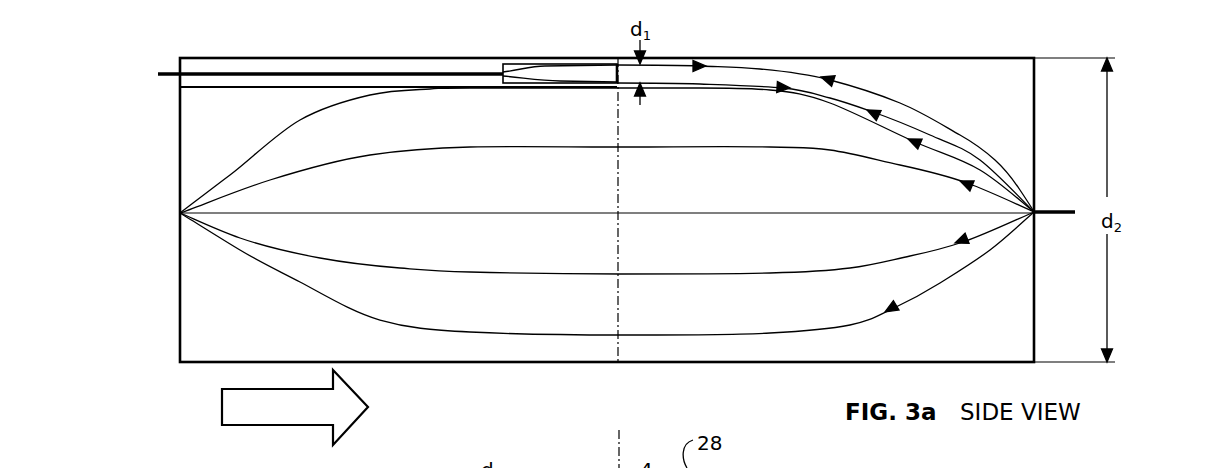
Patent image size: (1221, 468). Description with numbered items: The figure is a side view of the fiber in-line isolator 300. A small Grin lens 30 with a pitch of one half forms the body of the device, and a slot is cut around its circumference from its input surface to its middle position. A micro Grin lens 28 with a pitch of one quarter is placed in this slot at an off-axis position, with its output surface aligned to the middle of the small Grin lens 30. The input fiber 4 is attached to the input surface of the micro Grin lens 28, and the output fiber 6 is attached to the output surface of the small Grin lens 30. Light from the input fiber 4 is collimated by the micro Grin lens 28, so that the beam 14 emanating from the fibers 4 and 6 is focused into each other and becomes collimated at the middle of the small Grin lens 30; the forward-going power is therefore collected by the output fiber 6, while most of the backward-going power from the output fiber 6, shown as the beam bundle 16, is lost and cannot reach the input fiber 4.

The input fiber 4 is at (172, 73).
The micro Grin lens 28 is at (510, 64).
The small Grin lens 30 is at (895, 57).
The beam 14 is at (910, 127).
The beam bundle 16 is at (797, 147).
The output fiber 6 is at (1058, 217).
The fiber in-line isolator 300 is at (668, 189).